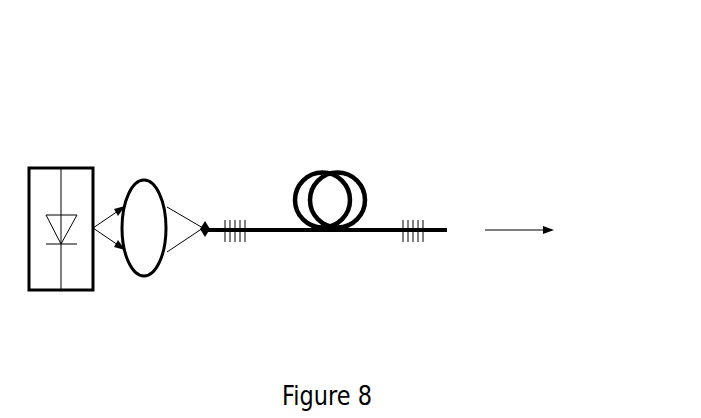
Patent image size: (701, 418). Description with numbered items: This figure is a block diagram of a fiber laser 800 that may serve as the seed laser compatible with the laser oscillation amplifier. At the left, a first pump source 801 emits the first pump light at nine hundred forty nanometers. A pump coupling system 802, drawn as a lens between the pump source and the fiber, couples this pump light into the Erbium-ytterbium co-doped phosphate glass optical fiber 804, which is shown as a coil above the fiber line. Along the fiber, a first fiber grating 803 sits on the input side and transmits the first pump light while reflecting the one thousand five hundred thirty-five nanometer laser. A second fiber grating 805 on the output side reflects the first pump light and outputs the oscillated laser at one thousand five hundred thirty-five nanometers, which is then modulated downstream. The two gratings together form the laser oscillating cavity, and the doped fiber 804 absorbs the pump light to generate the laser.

The fiber laser 800 is at (489, 109).
The first pump source 801 is at (45, 182).
The pump coupling system 802 is at (145, 203).
The first fiber grating 803 is at (235, 240).
The Erbium-ytterbium co-doped phosphate glass optical fiber 804 is at (335, 170).
The second fiber grating 805 is at (417, 240).